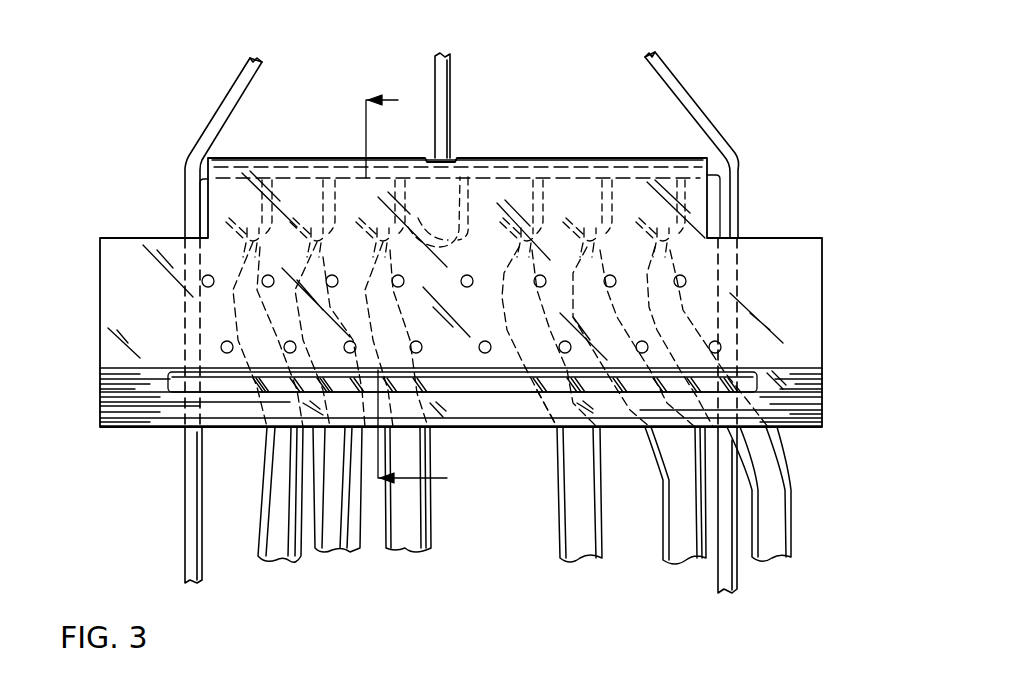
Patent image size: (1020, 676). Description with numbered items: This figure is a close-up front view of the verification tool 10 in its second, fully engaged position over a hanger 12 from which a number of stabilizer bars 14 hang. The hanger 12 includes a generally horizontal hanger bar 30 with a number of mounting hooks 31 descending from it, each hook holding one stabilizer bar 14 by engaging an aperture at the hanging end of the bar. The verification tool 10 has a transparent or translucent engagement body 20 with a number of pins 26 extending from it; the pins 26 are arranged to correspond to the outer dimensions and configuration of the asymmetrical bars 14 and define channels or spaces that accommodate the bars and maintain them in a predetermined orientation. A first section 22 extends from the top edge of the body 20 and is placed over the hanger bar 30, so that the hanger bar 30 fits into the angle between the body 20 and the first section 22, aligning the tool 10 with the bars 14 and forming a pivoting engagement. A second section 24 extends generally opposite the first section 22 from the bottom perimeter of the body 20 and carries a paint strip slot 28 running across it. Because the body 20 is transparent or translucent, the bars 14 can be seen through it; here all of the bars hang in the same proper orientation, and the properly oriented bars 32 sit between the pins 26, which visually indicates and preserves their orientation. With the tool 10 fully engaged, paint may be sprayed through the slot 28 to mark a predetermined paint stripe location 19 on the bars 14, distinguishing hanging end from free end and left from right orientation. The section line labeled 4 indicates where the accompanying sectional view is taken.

The verification tool 10 is at (76, 347).
The hanger 12 is at (697, 105).
The stabilizer bars 14 is at (563, 513).
The paint stripe location 19 is at (553, 382).
The engagement body 20 is at (822, 317).
The first section 22 is at (570, 158).
The second section 24 is at (800, 430).
The pins 26 is at (680, 280).
The paint strip slot 28 is at (747, 367).
The hanger bar 30 is at (497, 170).
The mounting hooks 31 is at (289, 178).
The properly oriented bars 32 is at (267, 562).
The section line 4- 4 is at (418, 289).